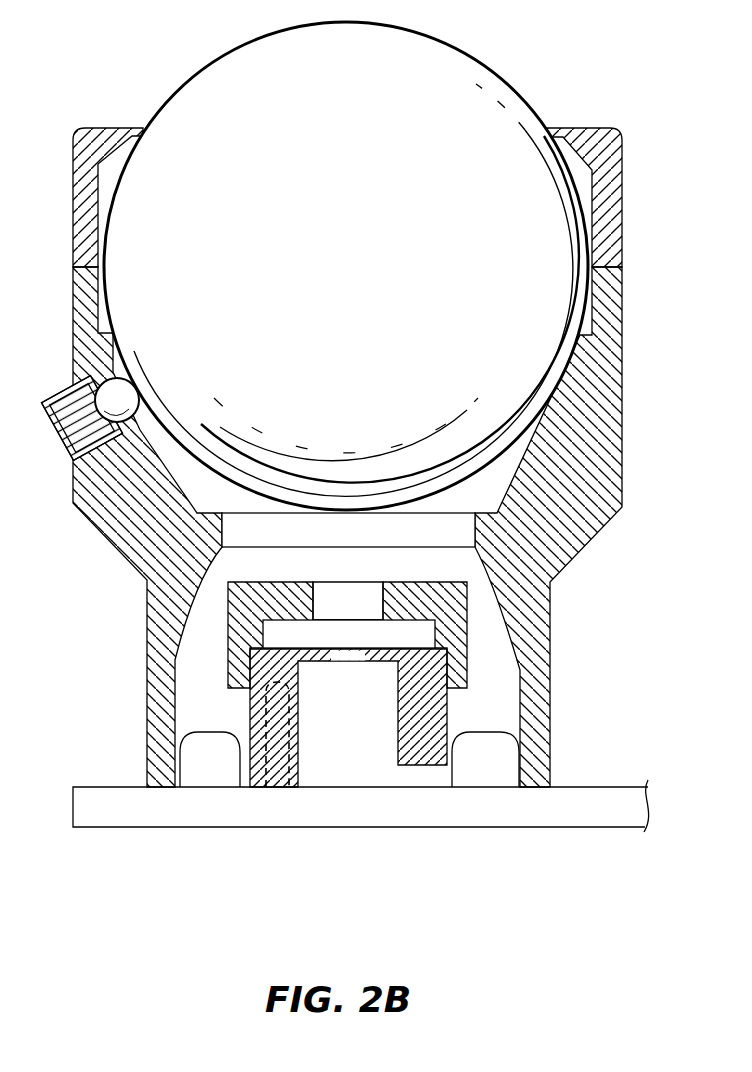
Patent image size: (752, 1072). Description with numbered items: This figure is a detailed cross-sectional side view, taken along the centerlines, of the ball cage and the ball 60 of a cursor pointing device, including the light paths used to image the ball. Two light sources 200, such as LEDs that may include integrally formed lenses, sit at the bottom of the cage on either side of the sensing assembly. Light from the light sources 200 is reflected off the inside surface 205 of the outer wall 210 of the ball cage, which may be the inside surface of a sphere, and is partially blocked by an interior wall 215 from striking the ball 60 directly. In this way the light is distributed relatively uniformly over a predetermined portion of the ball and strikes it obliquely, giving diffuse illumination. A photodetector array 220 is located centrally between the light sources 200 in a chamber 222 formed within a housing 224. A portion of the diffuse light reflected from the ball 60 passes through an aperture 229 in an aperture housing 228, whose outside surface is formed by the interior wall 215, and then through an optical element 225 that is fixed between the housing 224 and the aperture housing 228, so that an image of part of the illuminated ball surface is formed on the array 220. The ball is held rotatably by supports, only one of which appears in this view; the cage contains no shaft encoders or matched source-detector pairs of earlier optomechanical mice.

The ball 60 is at (211, 63).
The light sources 200 is at (203, 770).
The inside surface 205 is at (175, 627).
The outer wall 210 is at (160, 720).
The interior wall 215 is at (230, 662).
The photodetector array 220 is at (377, 777).
The chamber 222 is at (328, 757).
The housing 224 is at (433, 713).
The optical element 225 is at (289, 634).
The aperture housing 228 is at (455, 620).
The aperture 229 is at (355, 603).